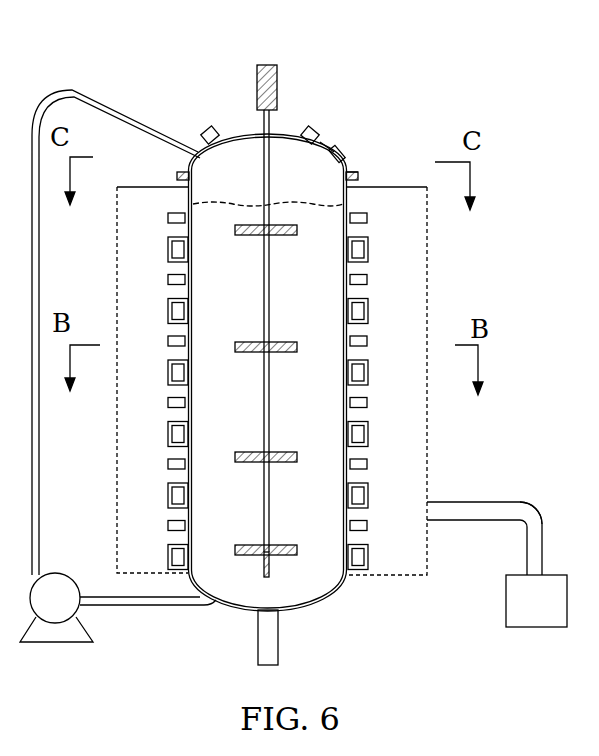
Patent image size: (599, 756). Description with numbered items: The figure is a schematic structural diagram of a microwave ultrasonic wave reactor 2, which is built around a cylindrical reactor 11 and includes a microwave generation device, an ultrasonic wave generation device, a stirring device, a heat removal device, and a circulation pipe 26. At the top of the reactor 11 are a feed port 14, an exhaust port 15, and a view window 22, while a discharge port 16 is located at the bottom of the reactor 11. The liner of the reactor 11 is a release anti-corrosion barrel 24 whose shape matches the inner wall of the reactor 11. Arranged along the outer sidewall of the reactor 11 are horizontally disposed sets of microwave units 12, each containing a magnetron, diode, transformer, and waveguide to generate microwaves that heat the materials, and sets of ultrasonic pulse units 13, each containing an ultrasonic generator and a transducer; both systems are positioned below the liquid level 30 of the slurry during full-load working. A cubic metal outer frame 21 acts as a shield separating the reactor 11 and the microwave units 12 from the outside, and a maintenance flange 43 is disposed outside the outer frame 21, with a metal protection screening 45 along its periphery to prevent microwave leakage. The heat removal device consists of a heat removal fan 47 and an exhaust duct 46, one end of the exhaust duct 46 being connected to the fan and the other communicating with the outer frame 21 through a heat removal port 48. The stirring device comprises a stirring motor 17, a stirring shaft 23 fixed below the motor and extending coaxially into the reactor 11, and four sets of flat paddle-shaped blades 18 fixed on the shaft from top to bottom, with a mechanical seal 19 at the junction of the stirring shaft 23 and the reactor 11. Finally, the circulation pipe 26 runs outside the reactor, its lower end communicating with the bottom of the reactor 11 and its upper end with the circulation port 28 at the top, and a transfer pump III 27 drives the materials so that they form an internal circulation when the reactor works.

The microwave ultrasonic wave reactor 2 is at (96, 48).
The reactor 11 is at (246, 610).
The microwave unit 12 is at (368, 246).
The ultrasonic pulse unit 13 is at (168, 338).
The feed port 14 is at (206, 130).
The exhaust port 15 is at (312, 132).
The discharge port 16 is at (270, 628).
The stirring motor 17 is at (262, 92).
The blades 18 is at (286, 341).
The mechanical seal 19 is at (272, 178).
The outer frame 21 is at (430, 355).
The view window 22 is at (342, 152).
The stirring shaft 23 is at (328, 150).
The release anti-corrosion barrel 24 is at (226, 603).
The circulation pipe 26 is at (39, 470).
The transfer pump III 27 is at (57, 598).
The circulation port 28 is at (196, 160).
The liquid level 30 is at (205, 205).
The maintenance flange 43 is at (360, 176).
The metal protection screening 45 is at (356, 172).
The exhaust duct 46 is at (513, 512).
The heat removal fan 47 is at (530, 600).
The heat removal port 48 is at (428, 502).